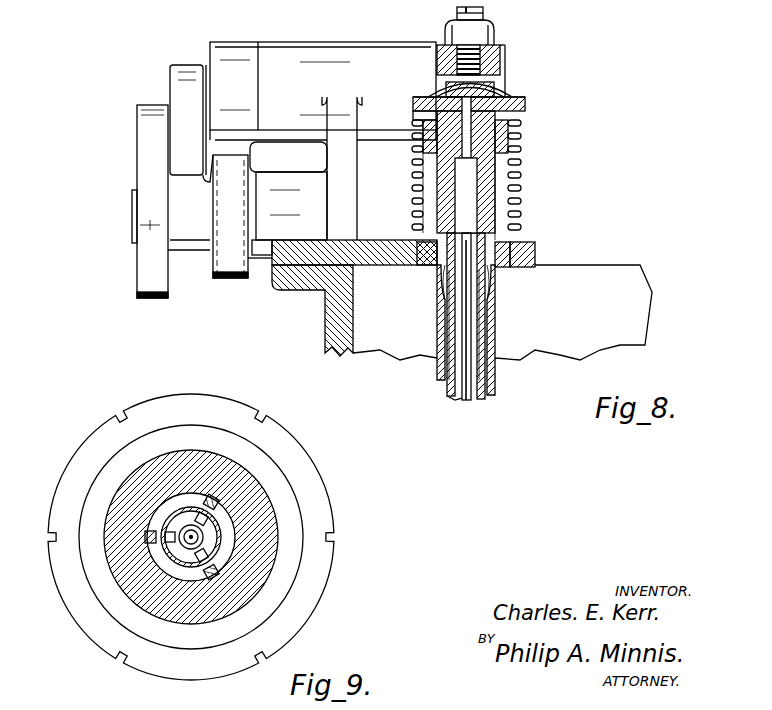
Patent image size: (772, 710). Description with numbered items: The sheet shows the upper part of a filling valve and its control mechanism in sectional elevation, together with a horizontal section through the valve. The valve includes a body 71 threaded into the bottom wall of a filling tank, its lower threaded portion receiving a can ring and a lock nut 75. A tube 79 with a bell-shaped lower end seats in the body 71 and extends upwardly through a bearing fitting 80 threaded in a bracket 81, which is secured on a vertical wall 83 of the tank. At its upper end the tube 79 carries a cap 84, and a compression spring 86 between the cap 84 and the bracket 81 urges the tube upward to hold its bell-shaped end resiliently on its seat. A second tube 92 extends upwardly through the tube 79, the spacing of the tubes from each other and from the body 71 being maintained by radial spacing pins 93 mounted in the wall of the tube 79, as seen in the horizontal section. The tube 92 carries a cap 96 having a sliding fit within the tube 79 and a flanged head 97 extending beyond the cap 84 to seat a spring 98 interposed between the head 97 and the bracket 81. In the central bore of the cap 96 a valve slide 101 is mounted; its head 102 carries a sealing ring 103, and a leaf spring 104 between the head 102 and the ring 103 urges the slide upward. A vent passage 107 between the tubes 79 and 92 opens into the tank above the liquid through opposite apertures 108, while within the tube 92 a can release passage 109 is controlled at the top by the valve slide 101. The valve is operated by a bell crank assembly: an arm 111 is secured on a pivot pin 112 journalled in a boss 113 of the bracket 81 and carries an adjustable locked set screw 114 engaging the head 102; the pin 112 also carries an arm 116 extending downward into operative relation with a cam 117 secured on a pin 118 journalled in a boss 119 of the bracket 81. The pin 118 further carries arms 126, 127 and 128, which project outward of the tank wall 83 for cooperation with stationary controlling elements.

In FIG. 9, the valve body 71 is at (247, 483).
In FIG. 9, the lock nut 75 is at (313, 486).
In FIG. 8, the tube 79 is at (497, 384).
In FIG. 9, the tube 79 is at (222, 535).
In FIG. 8, the bearing fitting 80 is at (515, 242).
In FIG. 8, the bracket 81 is at (535, 245).
In FIG. 8, the vertical wall 83 is at (340, 322).
In FIG. 8, the cap 84 is at (520, 126).
In FIG. 8, the compression spring 86 is at (520, 170).
In FIG. 8, the tube 92 is at (470, 398).
In FIG. 9, the tube 92 is at (215, 547).
In FIG. 9, the radial spacing pins 93 is at (226, 566).
In FIG. 8, the cap 96 is at (520, 111).
In FIG. 8, the flanged head 97 is at (527, 107).
In FIG. 8, the spring 98 is at (520, 148).
In FIG. 8, the valve slide 101 is at (525, 97).
In FIG. 8, the head 102 is at (508, 82).
In FIG. 8, the sealing ring 103 is at (413, 108).
In FIG. 8, the leaf spring 104 is at (440, 95).
In FIG. 8, the vent passage 107 is at (483, 344).
In FIG. 8, the apertures 108 is at (438, 283).
In FIG. 8, the can release passage 109 is at (455, 390).
In FIG. 8, the arm 111 is at (497, 46).
In FIG. 8, the pivot pin 112 is at (207, 63).
In FIG. 8, the boss 113 is at (295, 45).
In FIG. 8, the set screw 114 is at (485, 12).
In FIG. 8, the arm 116 is at (234, 45).
In FIG. 8, the cam 117 is at (225, 282).
In FIG. 8, the pin 118 is at (357, 212).
In FIG. 8, the boss 119 is at (264, 262).
In FIG. 8, the arm 126 is at (180, 85).
In FIG. 8, the arm 127 is at (143, 147).
In FIG. 8, the arm 128 is at (142, 280).